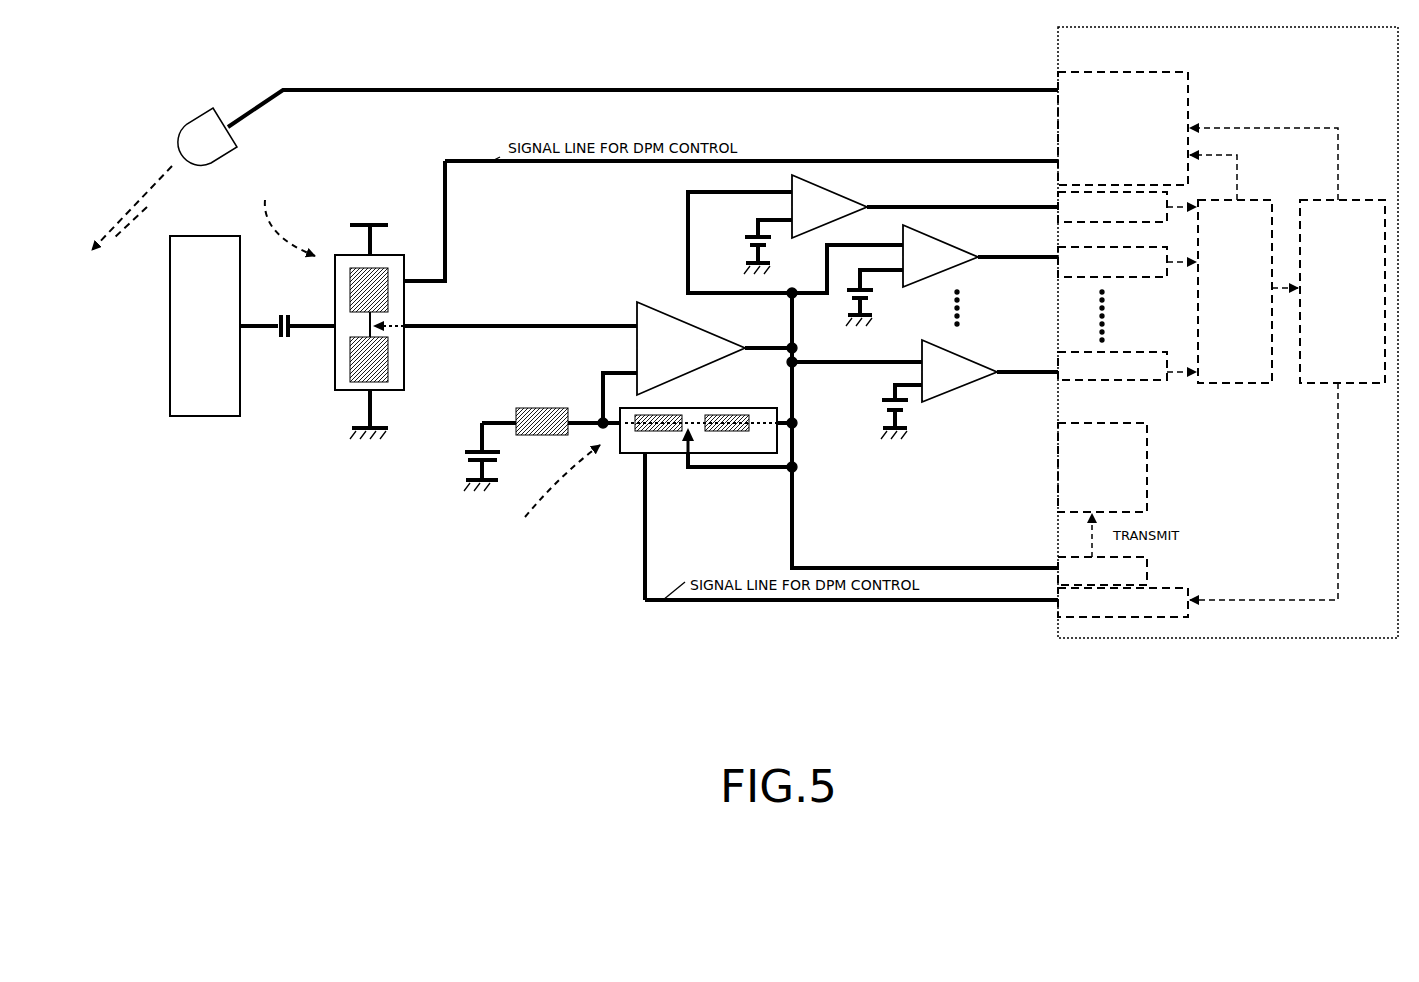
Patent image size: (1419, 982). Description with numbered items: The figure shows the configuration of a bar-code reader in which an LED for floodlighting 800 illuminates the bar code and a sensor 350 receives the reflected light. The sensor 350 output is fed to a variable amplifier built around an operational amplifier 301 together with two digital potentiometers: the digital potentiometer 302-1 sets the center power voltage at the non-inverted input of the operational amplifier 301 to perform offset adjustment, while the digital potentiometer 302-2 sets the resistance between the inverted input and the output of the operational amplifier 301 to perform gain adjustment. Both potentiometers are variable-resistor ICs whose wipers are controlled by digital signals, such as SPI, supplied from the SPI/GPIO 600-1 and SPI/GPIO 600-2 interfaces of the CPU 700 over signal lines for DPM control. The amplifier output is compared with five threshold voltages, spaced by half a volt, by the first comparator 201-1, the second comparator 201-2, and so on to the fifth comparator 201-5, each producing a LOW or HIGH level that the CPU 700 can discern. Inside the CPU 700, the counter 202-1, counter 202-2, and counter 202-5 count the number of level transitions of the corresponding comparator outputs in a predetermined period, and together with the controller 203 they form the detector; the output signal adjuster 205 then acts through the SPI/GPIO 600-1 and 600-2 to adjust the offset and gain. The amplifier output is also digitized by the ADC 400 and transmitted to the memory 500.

The LED for floodlighting 800 is at (240, 143).
The sensor 350 is at (195, 418).
The digital potentiometer 302-1 is at (337, 392).
The operational amplifier 301 is at (650, 300).
The digital potentiometer 302-2 is at (660, 455).
The comparator 201-1 is at (790, 178).
The comparator 201-2 is at (905, 226).
The comparator 201-5 is at (968, 386).
The CPU 700 is at (1058, 52).
The SPI/GPIO 600-1 is at (1190, 80).
The SPI/GPIO 600-2 is at (1165, 617).
The counter 202-1 is at (1075, 222).
The counter 202-2 is at (1118, 277).
The counter 202-5 is at (1100, 380).
The controller 203 is at (1258, 385).
The output signal adjuster 205 is at (1308, 385).
The memory 500 is at (1147, 467).
The ADC 400 is at (1147, 567).